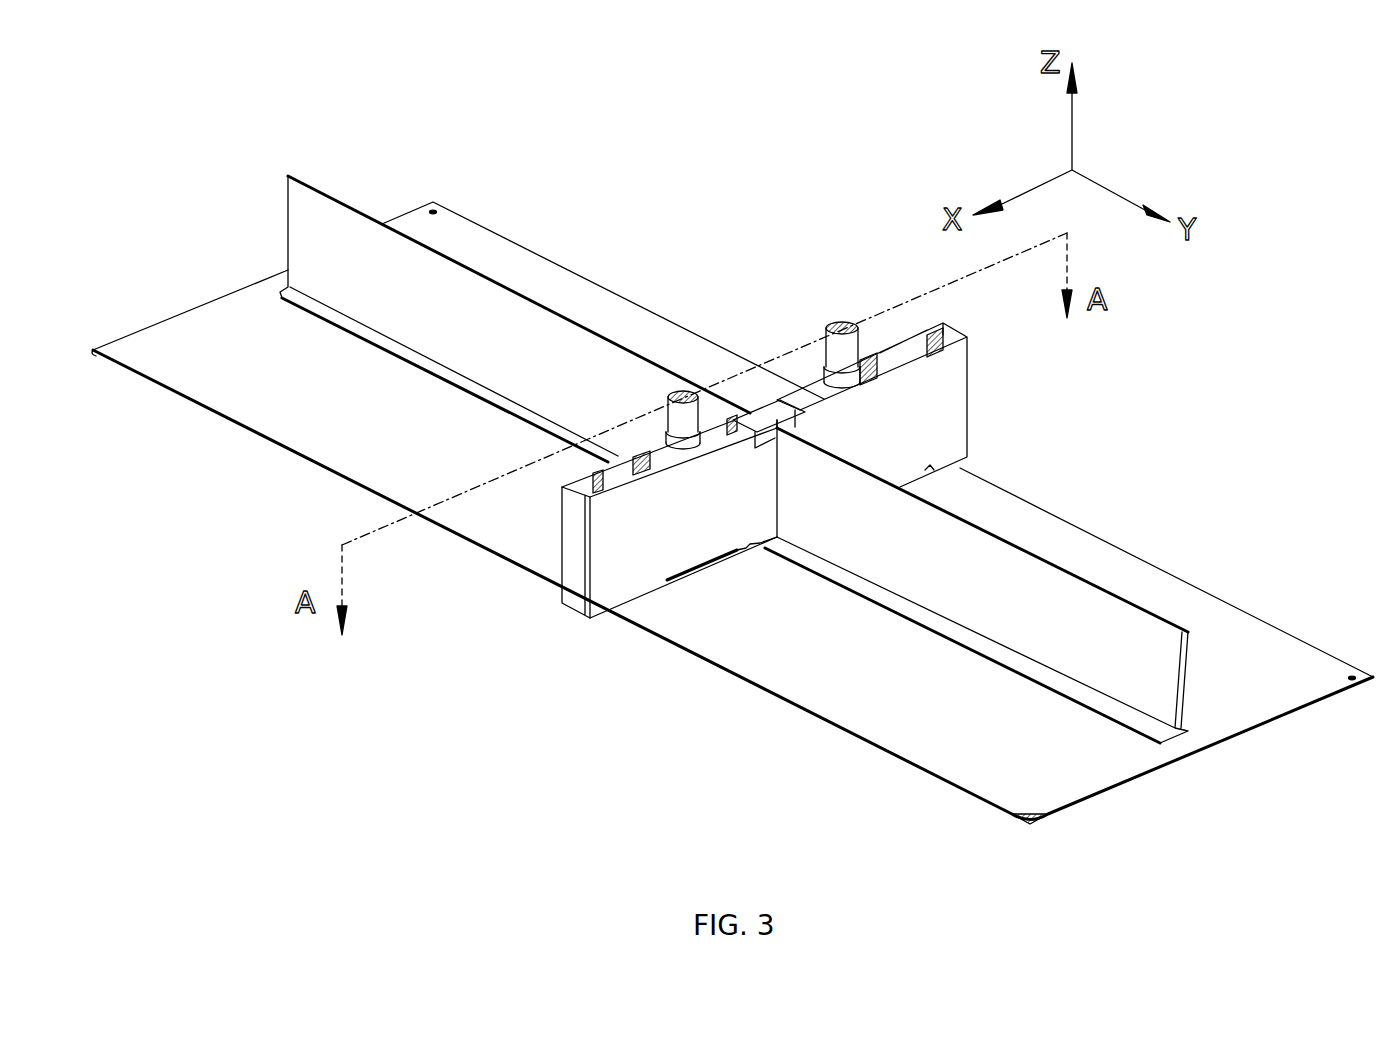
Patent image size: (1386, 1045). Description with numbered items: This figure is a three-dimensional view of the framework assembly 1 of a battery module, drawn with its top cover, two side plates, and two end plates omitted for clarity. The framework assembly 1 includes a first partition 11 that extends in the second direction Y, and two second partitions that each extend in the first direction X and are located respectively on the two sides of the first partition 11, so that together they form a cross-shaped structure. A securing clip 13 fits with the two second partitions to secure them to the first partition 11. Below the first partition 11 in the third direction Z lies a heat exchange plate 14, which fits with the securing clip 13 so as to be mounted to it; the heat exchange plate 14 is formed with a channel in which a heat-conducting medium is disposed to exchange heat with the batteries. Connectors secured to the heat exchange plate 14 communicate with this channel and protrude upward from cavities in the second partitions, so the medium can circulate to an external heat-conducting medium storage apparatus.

The framework assembly 1 is at (732, 447).
The first partition 11 is at (1115, 667).
The securing clip 13 is at (760, 411).
The heat exchange plate 14 is at (1135, 581).